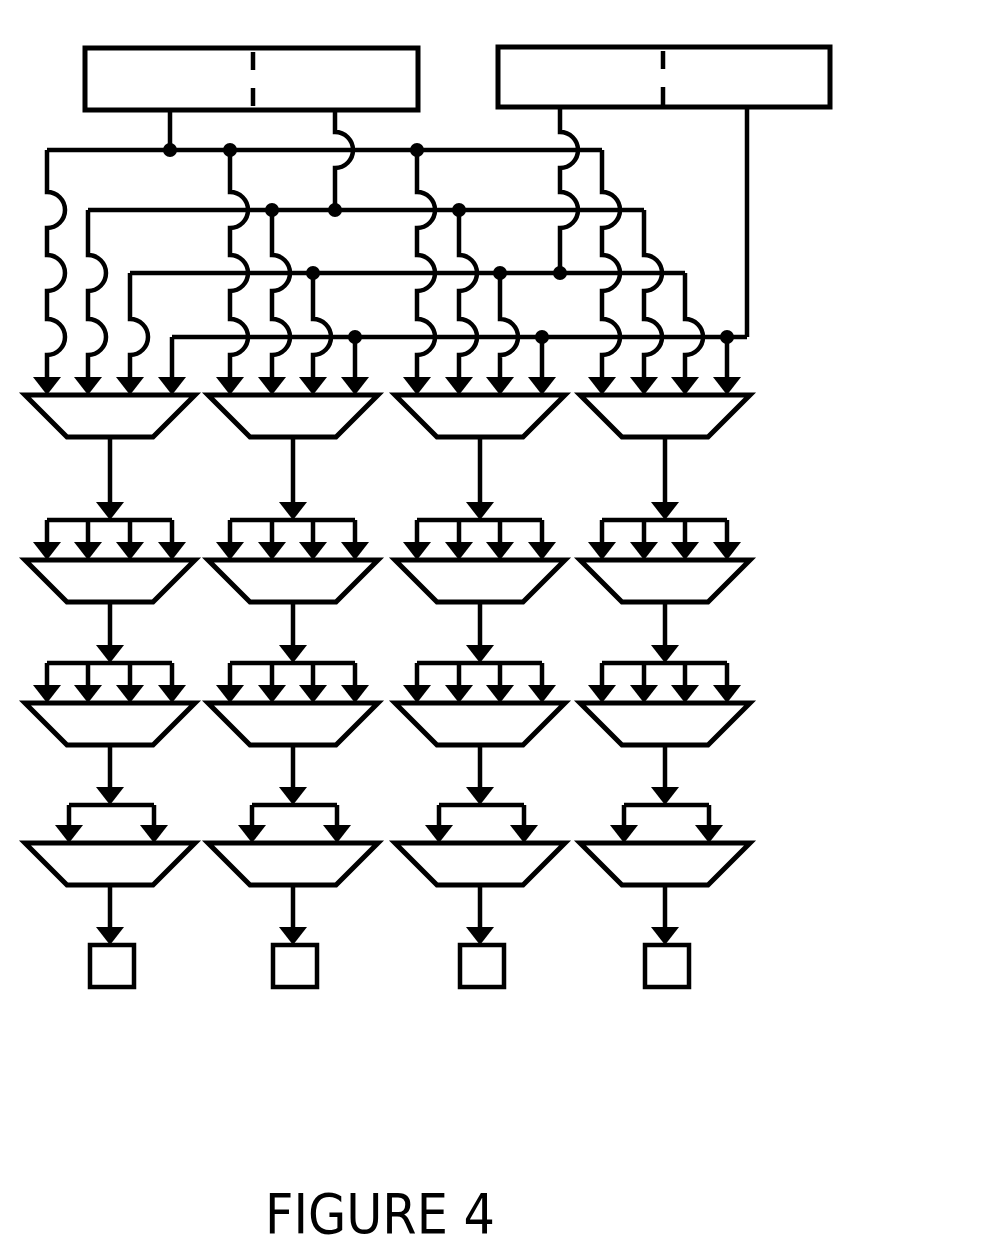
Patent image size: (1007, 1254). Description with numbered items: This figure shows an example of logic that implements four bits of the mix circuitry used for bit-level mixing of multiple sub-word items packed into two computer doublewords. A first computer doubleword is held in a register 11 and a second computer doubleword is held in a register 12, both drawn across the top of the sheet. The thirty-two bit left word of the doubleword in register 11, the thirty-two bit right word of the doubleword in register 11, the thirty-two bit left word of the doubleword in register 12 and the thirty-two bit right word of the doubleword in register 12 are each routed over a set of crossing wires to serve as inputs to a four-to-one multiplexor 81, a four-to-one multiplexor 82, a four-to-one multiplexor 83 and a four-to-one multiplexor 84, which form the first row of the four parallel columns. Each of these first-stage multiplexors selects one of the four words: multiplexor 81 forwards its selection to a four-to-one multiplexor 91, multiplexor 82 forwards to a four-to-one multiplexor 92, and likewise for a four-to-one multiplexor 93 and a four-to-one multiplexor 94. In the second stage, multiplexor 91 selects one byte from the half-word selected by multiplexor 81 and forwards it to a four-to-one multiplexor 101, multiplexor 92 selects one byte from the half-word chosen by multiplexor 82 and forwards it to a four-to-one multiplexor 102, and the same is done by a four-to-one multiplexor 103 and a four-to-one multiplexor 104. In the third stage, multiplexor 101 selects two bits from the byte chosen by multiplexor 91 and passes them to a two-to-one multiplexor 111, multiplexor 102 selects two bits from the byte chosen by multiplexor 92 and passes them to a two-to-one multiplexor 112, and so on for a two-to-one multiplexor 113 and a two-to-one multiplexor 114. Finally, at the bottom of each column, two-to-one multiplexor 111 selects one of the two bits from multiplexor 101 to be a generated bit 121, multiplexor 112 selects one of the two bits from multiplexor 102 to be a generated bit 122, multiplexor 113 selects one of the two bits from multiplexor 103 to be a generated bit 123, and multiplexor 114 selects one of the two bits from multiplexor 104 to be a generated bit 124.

The register 11 is at (418, 50).
The register 12 is at (830, 48).
The four-to-one multiplexor 81 is at (153, 437).
The four-to-one multiplexor 82 is at (336, 437).
The four-to-one multiplexor 83 is at (523, 437).
The four-to-one multiplexor 84 is at (708, 437).
The four-to-one multiplexor 91 is at (153, 602).
The four-to-one multiplexor 92 is at (336, 602).
The four-to-one multiplexor 93 is at (523, 602).
The four-to-one multiplexor 94 is at (708, 602).
The four-to-one multiplexor 101 is at (153, 745).
The four-to-one multiplexor 102 is at (336, 745).
The four-to-one multiplexor 103 is at (523, 745).
The four-to-one multiplexor 104 is at (708, 745).
The two-to-one multiplexor 111 is at (153, 885).
The two-to-one multiplexor 112 is at (336, 885).
The two-to-one multiplexor 113 is at (523, 885).
The two-to-one multiplexor 114 is at (708, 885).
The generated bit 121 is at (134, 963).
The generated bit 122 is at (317, 963).
The generated bit 123 is at (504, 963).
The generated bit 124 is at (689, 963).